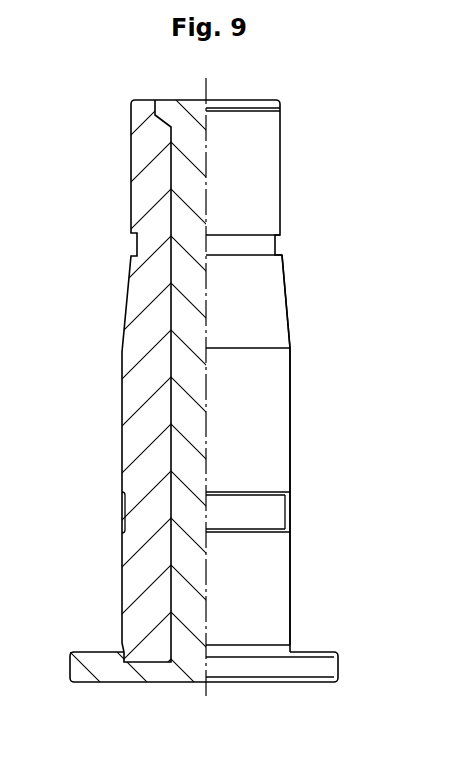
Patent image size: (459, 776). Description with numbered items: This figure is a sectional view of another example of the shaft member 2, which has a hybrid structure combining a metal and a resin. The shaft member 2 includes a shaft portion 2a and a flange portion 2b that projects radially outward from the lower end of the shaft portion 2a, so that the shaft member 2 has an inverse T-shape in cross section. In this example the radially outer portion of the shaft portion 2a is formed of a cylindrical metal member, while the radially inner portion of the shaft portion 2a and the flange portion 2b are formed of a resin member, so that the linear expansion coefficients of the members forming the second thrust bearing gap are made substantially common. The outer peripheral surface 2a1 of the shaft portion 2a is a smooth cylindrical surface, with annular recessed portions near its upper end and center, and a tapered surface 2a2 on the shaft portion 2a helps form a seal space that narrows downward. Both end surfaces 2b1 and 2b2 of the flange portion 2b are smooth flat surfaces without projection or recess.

The shaft member 2 is at (282, 155).
The shaft portion 2a is at (240, 123).
The outer peripheral surface 2a1 is at (290, 432).
The tapered surface 2a2 is at (286, 285).
The flange portion 2b is at (241, 665).
The end surface of flange portion 2b1 is at (310, 650).
The end surface of flange portion 2b2 is at (305, 682).